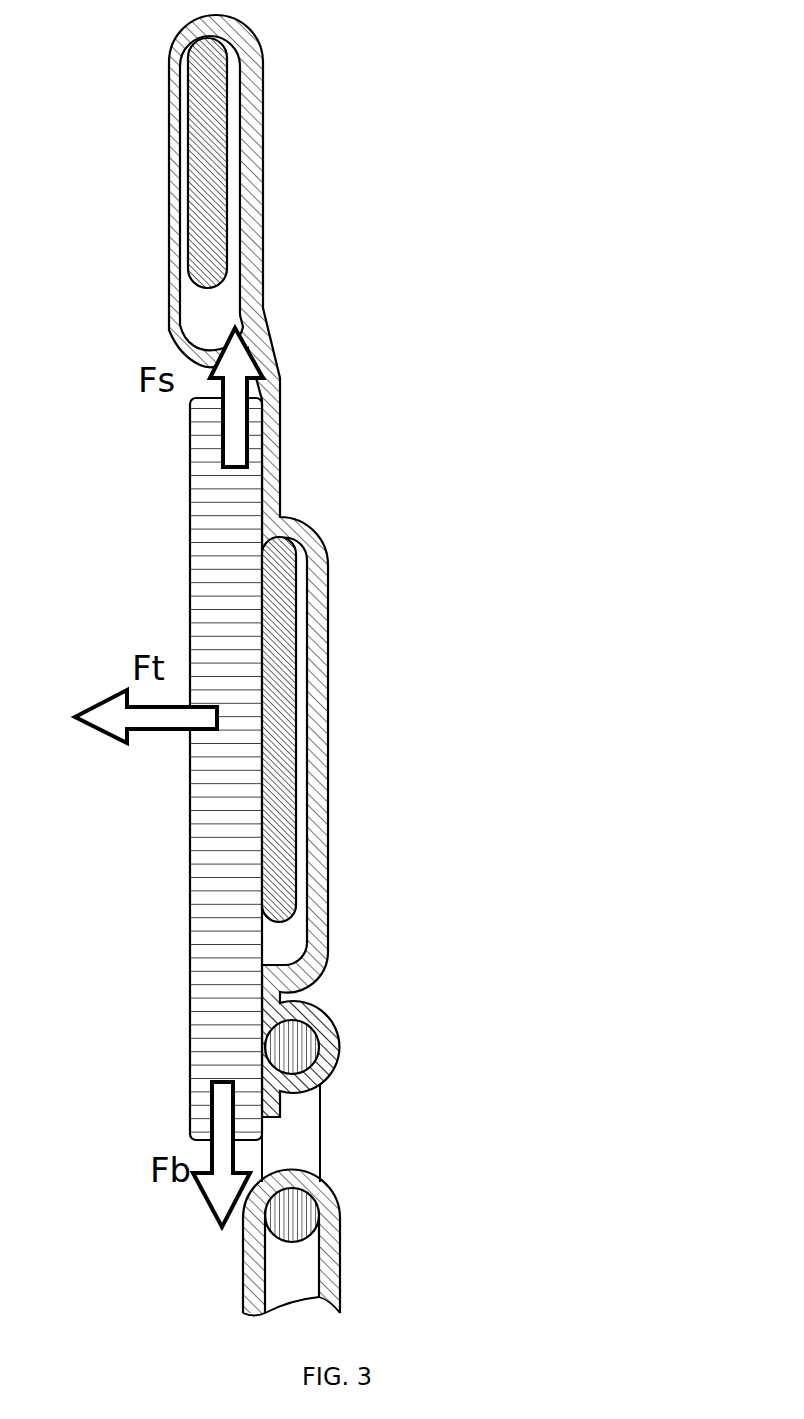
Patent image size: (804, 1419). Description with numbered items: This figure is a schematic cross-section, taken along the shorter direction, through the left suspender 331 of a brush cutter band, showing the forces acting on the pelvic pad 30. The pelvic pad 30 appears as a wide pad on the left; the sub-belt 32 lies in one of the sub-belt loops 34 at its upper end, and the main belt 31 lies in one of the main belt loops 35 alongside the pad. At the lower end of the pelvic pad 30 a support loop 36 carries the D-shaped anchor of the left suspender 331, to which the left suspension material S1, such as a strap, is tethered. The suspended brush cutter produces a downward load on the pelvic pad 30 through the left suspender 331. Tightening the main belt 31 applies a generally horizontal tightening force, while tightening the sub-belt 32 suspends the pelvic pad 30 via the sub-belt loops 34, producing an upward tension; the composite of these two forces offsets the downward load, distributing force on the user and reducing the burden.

The pelvic pad 30 is at (190, 556).
The main belt 31 is at (285, 667).
The sub-belt 32 is at (222, 213).
The sub-belt loops 34 is at (263, 124).
The main belt loops 35 is at (328, 596).
The support loop 36 is at (333, 1023).
The left suspender 331 is at (343, 1075).
The left suspension material S1 is at (342, 1240).